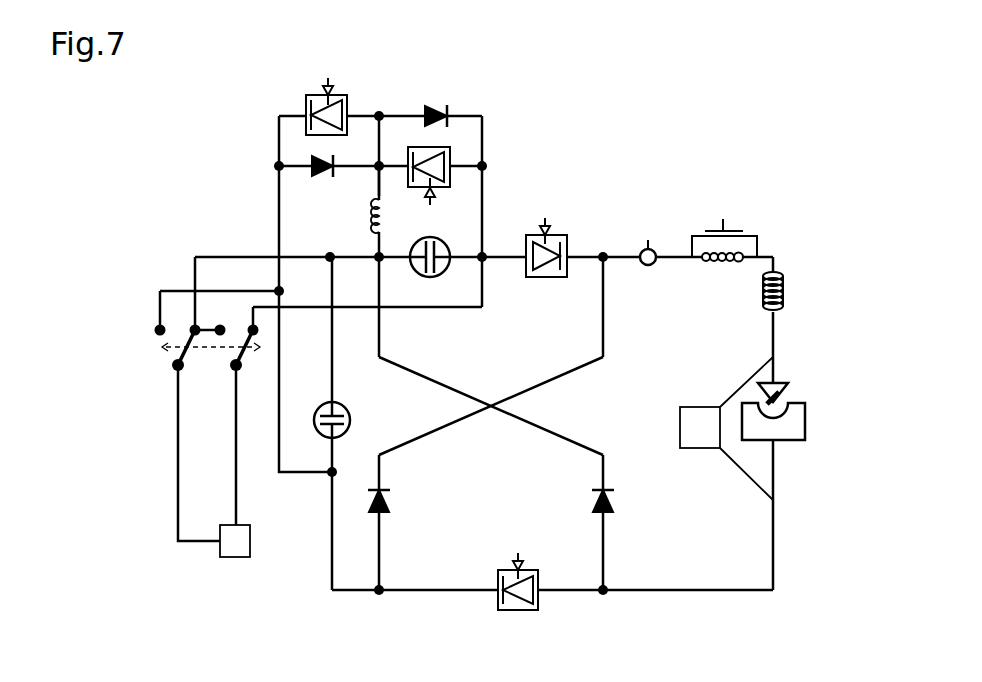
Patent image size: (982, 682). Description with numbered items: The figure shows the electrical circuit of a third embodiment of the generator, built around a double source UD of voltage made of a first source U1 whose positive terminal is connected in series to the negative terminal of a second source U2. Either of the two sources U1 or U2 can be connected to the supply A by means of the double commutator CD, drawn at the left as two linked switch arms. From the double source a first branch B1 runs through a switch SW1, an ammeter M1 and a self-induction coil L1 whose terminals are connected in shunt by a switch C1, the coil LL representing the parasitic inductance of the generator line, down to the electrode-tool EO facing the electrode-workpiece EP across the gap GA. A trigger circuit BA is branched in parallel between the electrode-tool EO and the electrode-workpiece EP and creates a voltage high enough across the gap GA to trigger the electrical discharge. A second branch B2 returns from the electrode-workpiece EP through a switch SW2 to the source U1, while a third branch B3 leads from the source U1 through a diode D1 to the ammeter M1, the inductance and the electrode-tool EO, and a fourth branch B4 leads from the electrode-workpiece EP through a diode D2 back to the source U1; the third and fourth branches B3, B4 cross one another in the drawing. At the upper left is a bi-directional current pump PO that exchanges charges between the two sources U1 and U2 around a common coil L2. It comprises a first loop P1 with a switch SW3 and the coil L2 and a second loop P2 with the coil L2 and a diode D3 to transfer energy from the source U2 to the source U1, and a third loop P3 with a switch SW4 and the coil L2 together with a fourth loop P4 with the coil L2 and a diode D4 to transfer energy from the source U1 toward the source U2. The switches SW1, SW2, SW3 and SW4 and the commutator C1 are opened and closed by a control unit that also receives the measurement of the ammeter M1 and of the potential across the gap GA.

The switch SW4 is at (318, 106).
The bi-directional current pump PO is at (381, 94).
The diode D4 is at (433, 110).
The third loop P3 is at (279, 146).
The fourth loop P4 is at (468, 118).
The diode D3 is at (321, 172).
The second loop P2 is at (370, 172).
The first loop P1 is at (462, 177).
The coil L2 is at (370, 228).
The switch SW3 is at (436, 193).
The switch SW1 is at (575, 183).
The ammeter M1 is at (650, 250).
The switch C1 is at (730, 236).
The self-induction coil L1 is at (723, 268).
The first branch B1 is at (486, 262).
The second source U2 is at (441, 280).
The double source of voltage UD is at (343, 276).
The parasitic inductance LL is at (786, 300).
The electrode-tool EO is at (781, 378).
The gap GA is at (790, 398).
The electrode-workpiece EP is at (800, 432).
The trigger circuit BA is at (726, 428).
The first source U1 is at (312, 412).
The double commutator CD is at (235, 363).
The third branch B3 is at (426, 440).
The fourth branch B4 is at (564, 440).
The diode D2 is at (612, 501).
The diode D1 is at (392, 508).
The second branch B2 is at (705, 590).
The supply A is at (235, 542).
The switch SW2 is at (514, 612).